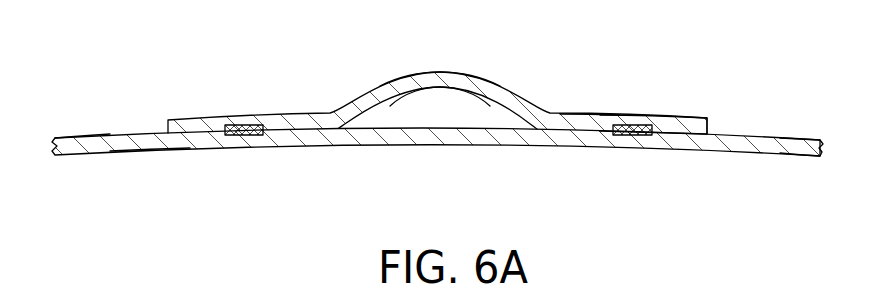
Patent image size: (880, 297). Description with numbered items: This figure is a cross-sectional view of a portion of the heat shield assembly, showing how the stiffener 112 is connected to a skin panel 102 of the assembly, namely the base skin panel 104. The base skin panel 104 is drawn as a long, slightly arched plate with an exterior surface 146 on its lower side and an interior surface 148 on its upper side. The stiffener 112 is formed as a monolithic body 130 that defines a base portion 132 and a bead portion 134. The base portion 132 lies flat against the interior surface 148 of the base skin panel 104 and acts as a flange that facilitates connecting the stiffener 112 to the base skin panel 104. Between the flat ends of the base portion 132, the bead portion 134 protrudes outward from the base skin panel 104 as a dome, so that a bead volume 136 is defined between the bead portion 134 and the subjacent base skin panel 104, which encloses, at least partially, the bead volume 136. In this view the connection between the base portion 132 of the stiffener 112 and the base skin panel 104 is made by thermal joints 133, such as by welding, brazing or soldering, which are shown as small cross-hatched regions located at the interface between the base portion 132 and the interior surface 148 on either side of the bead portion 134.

The skin panel 102 is at (733, 136).
The base skin panel 104 is at (807, 140).
The stiffener 112 is at (622, 118).
The monolithic body 130 is at (657, 118).
The base portion 132 is at (253, 117).
The thermal joints 133 is at (241, 136).
The bead portion 134 is at (438, 71).
The bead volume 136 is at (455, 99).
The exterior surface 146 is at (165, 149).
The interior surface 148 is at (115, 133).